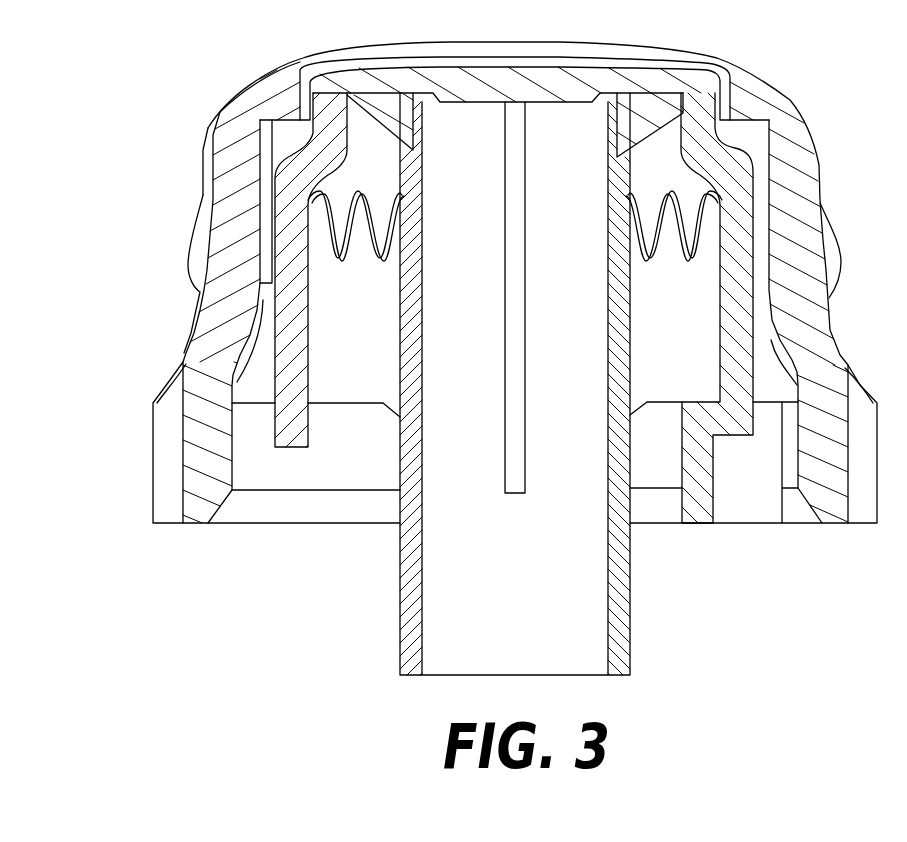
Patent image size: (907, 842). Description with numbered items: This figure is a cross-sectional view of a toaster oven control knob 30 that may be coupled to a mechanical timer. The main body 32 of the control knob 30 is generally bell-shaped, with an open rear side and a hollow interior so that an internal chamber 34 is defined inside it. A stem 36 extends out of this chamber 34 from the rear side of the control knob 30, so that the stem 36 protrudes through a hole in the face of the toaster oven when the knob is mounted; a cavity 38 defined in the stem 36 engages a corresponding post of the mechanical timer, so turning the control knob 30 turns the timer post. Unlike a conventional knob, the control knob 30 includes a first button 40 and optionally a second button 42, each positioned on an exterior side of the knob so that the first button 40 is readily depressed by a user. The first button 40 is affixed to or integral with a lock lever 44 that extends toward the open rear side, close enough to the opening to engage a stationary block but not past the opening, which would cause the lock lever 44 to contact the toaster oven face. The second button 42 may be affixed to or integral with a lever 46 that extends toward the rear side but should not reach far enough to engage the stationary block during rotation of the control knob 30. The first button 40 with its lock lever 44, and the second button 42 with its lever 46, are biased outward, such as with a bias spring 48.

The control knob 30 is at (760, 92).
The main body 32 is at (197, 510).
The internal chamber 34 is at (306, 483).
The stem 36 is at (623, 638).
The cavity 38 is at (566, 570).
The first button 40 is at (840, 242).
The second button 42 is at (197, 252).
The lock lever 44 is at (738, 173).
The lever 46 is at (300, 163).
The bias spring 48 is at (382, 265).